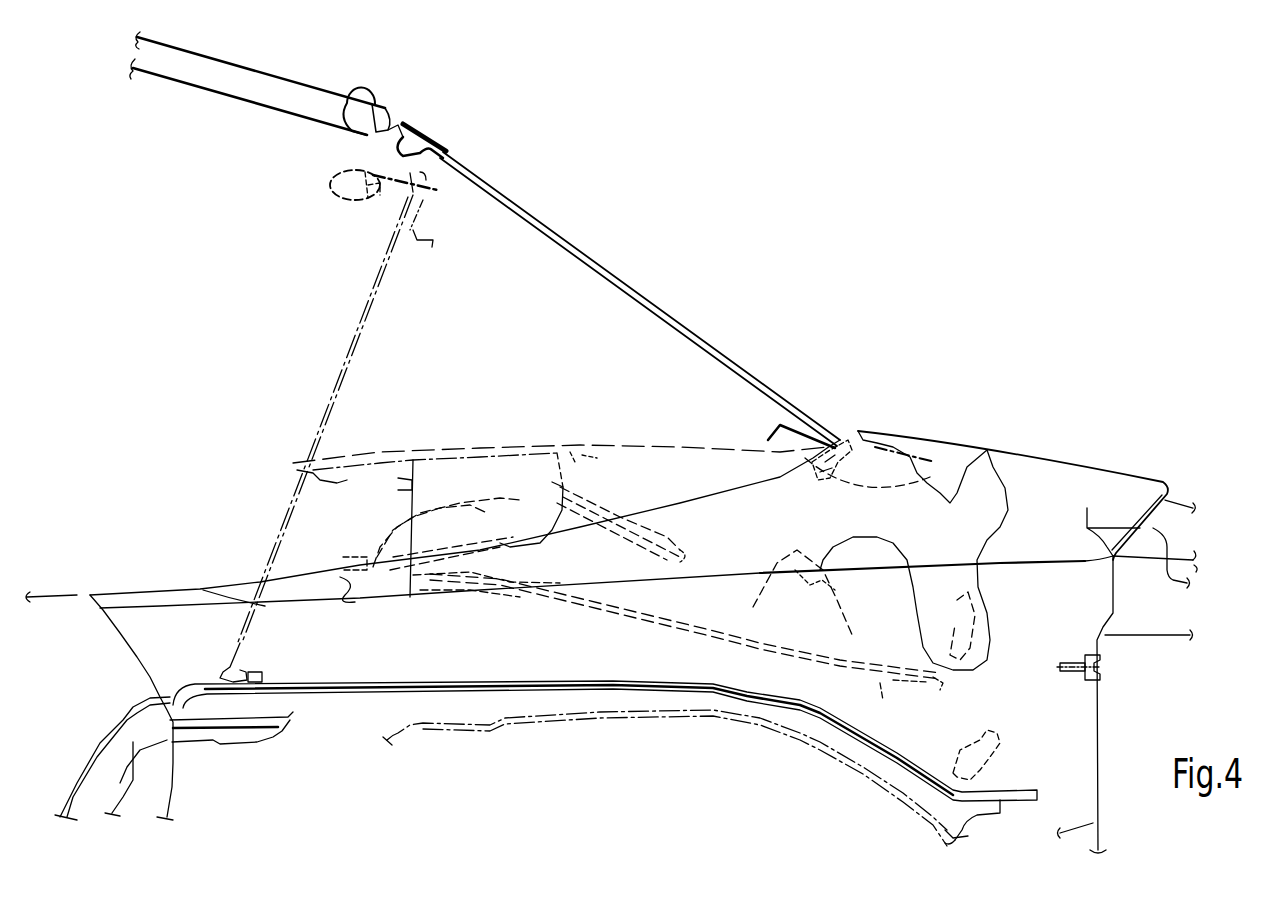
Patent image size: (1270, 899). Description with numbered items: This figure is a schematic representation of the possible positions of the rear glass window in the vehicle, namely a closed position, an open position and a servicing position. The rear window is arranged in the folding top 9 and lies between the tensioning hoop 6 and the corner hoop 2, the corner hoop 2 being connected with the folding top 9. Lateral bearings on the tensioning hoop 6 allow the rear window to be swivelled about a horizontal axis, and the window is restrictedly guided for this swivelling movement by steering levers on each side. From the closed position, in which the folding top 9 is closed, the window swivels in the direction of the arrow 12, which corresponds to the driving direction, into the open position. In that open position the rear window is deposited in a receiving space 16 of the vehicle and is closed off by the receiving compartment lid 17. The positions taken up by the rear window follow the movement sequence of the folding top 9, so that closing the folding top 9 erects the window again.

The folding top 9 is at (253, 70).
The arrow 12 is at (650, 313).
The receiving compartment lid 17 is at (719, 448).
The receiving space 16 is at (738, 535).
The tensioning hoop 6 is at (812, 478).
The corner hoop 2 is at (772, 575).